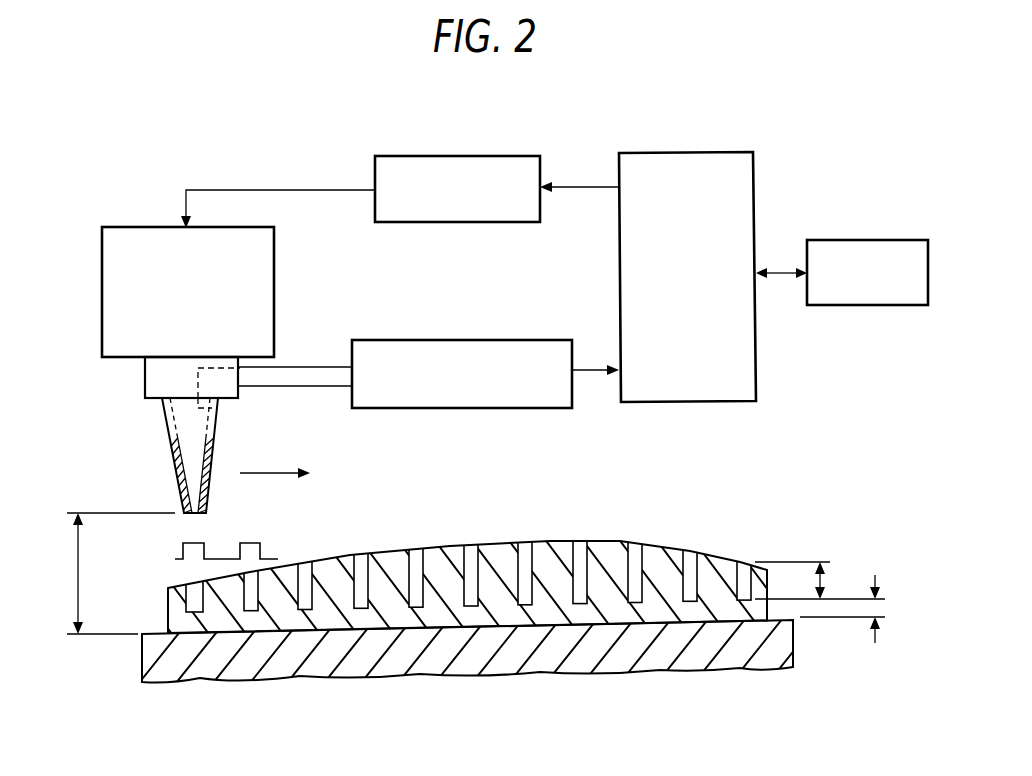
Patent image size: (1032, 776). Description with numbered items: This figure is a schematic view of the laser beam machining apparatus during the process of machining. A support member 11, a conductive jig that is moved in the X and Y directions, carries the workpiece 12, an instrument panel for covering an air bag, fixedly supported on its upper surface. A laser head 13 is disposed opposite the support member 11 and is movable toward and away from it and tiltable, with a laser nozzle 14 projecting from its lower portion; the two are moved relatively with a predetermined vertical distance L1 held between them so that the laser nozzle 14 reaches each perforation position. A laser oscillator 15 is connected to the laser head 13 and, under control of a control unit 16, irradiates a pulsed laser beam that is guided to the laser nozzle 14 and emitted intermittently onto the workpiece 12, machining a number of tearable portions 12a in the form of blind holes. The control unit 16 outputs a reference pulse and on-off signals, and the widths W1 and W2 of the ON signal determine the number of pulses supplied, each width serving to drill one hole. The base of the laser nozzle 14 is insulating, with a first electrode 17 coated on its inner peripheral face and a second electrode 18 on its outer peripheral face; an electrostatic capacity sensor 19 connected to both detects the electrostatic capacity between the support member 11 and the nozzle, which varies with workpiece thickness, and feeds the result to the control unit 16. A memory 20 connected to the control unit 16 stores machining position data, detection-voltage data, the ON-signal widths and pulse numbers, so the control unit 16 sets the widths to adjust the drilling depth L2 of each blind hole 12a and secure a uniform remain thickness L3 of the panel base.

The support member 11 is at (143, 659).
The workpiece 12 is at (468, 564).
The tearable portions 12a is at (310, 566).
The laser head 13 is at (102, 297).
The laser nozzle 14 is at (164, 424).
The laser oscillator 15 is at (458, 156).
The control unit 16 is at (685, 153).
The first electrode 17 is at (204, 442).
The second electrode 18 is at (176, 474).
The electrostatic capacity sensor 19 is at (462, 340).
The memory 20 is at (866, 240).
The predetermined vertical distance L1 is at (114, 573).
The depth of tearable portions L2 is at (820, 580).
The remain thickness L3 is at (853, 609).
The width of ON signal W1 is at (172, 542).
The width of ON signal W2 is at (262, 536).